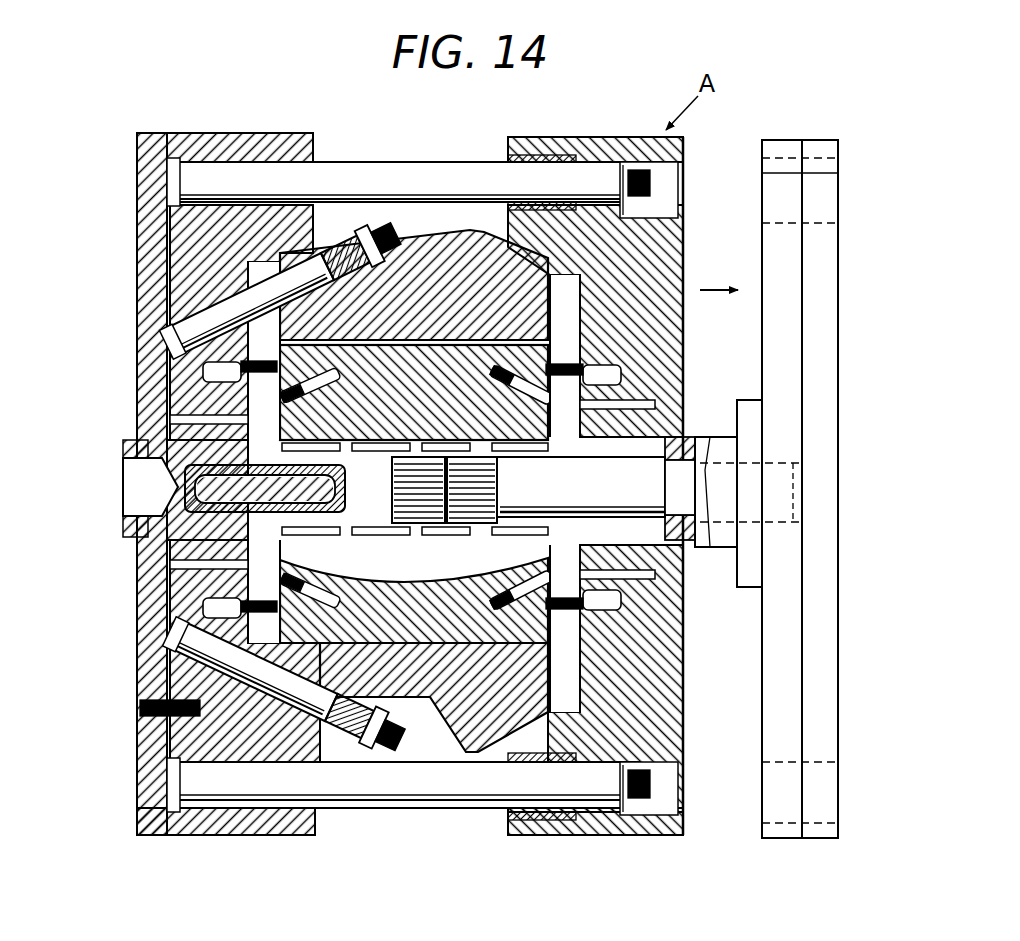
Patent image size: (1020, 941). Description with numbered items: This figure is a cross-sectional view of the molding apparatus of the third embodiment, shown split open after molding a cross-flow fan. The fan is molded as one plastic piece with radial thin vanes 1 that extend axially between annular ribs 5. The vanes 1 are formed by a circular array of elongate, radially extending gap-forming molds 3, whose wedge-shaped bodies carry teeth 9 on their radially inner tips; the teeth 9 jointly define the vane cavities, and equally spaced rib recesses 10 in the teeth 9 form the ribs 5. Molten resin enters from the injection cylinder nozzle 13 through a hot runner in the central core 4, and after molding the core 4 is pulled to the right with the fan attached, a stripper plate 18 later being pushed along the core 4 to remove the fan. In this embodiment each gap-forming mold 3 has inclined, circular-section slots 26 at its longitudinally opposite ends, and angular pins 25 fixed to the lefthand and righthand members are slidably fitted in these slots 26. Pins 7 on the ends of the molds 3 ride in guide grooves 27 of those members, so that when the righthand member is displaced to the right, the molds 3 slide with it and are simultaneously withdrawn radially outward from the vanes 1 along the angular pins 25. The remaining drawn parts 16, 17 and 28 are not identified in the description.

The vanes 1 is at (423, 523).
The gap-forming molds 3 is at (548, 350).
The central core 4 is at (660, 545).
The annular ribs 5 is at (452, 527).
The pins 7 is at (605, 368).
The teeth 9 is at (378, 455).
The rib recesses 10 is at (442, 445).
The injection cylinder nozzle 13 is at (128, 506).
The wedge block 16 is at (410, 268).
The inclined clamping bolt 17 is at (200, 305).
The stripper plate 18 is at (760, 537).
The angular pins 25 is at (585, 405).
The slots 26 is at (332, 383).
The guide grooves 27 is at (618, 378).
The tie bolt 28 is at (340, 162).